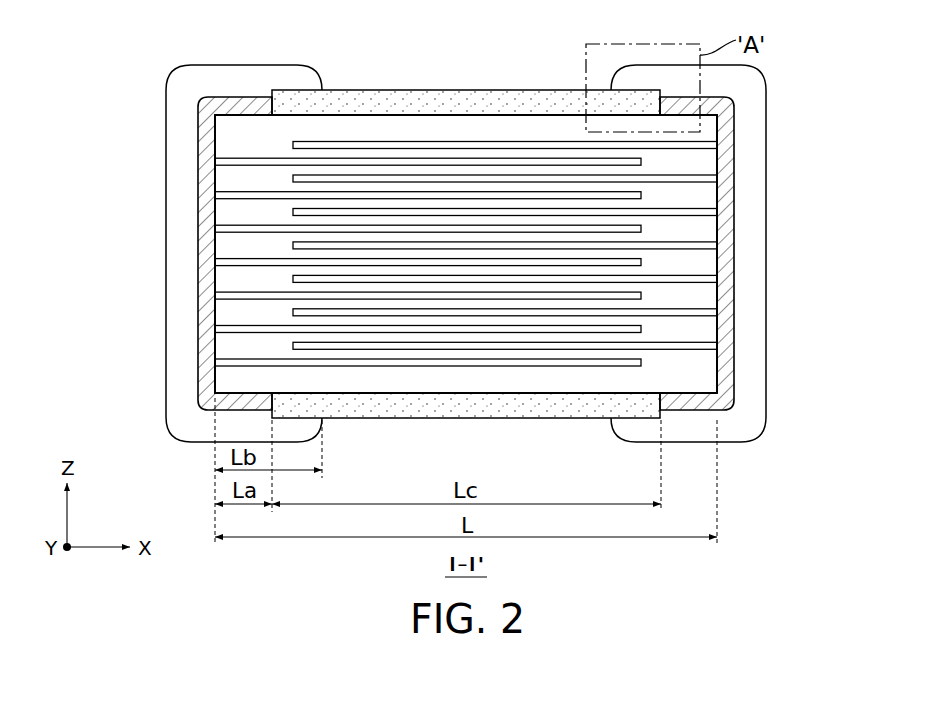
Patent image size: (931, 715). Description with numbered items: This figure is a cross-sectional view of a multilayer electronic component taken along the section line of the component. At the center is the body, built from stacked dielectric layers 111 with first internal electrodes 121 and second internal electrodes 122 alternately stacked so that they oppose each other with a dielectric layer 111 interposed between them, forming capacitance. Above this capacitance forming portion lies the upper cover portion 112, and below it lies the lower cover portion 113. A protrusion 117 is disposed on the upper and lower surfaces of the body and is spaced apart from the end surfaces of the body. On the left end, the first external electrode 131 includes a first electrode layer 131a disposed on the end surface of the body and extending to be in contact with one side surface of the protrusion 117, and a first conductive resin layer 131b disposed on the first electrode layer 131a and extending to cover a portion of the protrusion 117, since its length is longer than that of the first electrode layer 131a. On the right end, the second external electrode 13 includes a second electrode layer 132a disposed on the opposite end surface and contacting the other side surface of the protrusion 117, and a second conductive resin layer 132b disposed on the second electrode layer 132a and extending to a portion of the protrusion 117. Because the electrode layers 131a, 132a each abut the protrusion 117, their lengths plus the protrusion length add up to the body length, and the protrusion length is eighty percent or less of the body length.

The dielectric layer 111 is at (417, 152).
The upper cover portion 112 is at (353, 130).
The lower cover portion 113 is at (513, 378).
The protrusion 117 is at (487, 103).
The first internal electrode 121 is at (287, 163).
The second internal electrode 122 is at (555, 147).
The first external electrode 131 is at (182, 253).
The first electrode layer 131a is at (203, 193).
The first conductive resin layer 131b is at (92, 188).
The second external electrode 13 is at (746, 253).
The second electrode layer 132a is at (735, 192).
The second conductive resin layer 132b is at (755, 260).